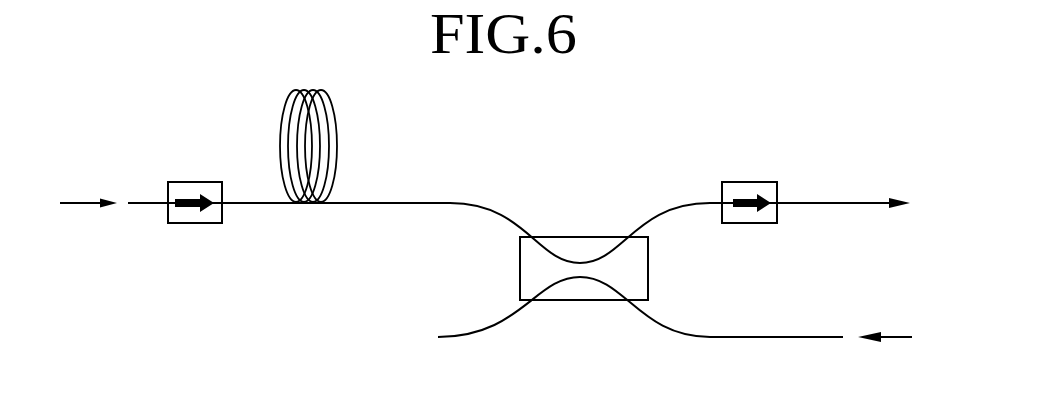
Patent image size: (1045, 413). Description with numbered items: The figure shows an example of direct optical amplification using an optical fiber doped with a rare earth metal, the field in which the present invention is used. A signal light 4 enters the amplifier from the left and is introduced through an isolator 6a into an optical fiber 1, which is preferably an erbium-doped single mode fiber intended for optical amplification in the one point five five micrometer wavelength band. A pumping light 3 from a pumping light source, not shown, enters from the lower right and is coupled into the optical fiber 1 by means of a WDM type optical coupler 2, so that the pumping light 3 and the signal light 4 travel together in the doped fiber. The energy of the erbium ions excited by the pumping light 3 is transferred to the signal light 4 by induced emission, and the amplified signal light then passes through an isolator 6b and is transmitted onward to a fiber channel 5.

The optical fiber 1 is at (337, 140).
The WDM type optical coupler 2 is at (592, 237).
The pumping light 3 is at (892, 337).
The signal light 4 is at (72, 203).
The fiber channel 5 is at (832, 203).
The isolator 6a is at (195, 182).
The isolator 6b is at (740, 182).